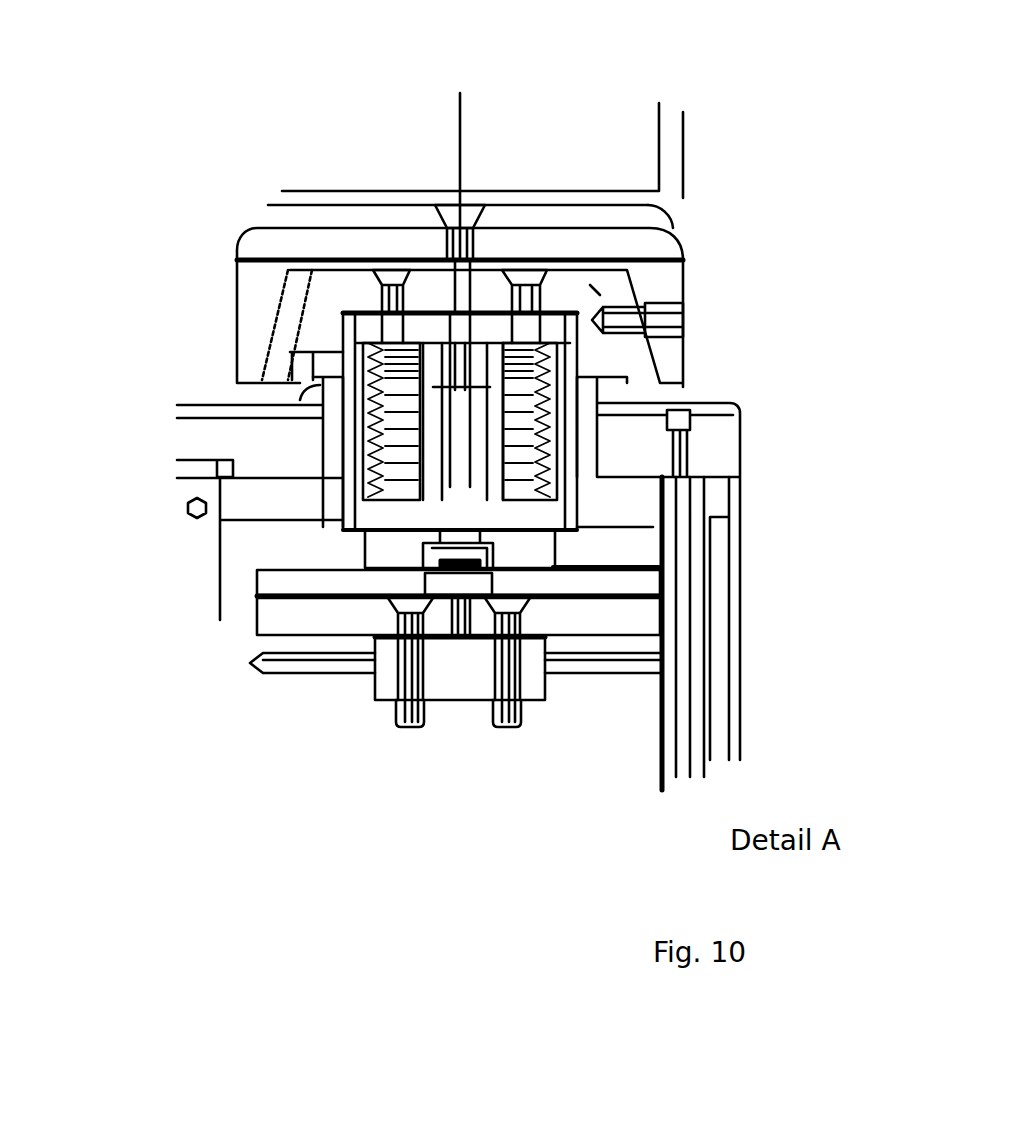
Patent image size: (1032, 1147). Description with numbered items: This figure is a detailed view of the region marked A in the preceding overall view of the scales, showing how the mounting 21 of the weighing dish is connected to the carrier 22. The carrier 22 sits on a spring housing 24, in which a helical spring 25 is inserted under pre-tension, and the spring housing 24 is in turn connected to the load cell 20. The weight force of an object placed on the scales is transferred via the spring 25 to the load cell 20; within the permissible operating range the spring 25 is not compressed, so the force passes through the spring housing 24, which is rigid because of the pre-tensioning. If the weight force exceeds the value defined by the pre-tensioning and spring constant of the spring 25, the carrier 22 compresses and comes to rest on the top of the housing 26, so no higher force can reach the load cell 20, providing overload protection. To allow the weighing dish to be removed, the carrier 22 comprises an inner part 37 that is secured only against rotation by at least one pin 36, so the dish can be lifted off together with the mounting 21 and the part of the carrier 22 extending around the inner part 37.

The load cell 20 is at (600, 723).
The mounting 21 is at (670, 167).
The carrier 22 is at (248, 333).
The spring housing 24 is at (568, 418).
The spring 25 is at (363, 470).
The housing 26 is at (212, 398).
The pin 36 is at (690, 308).
The inner part 37 is at (595, 290).